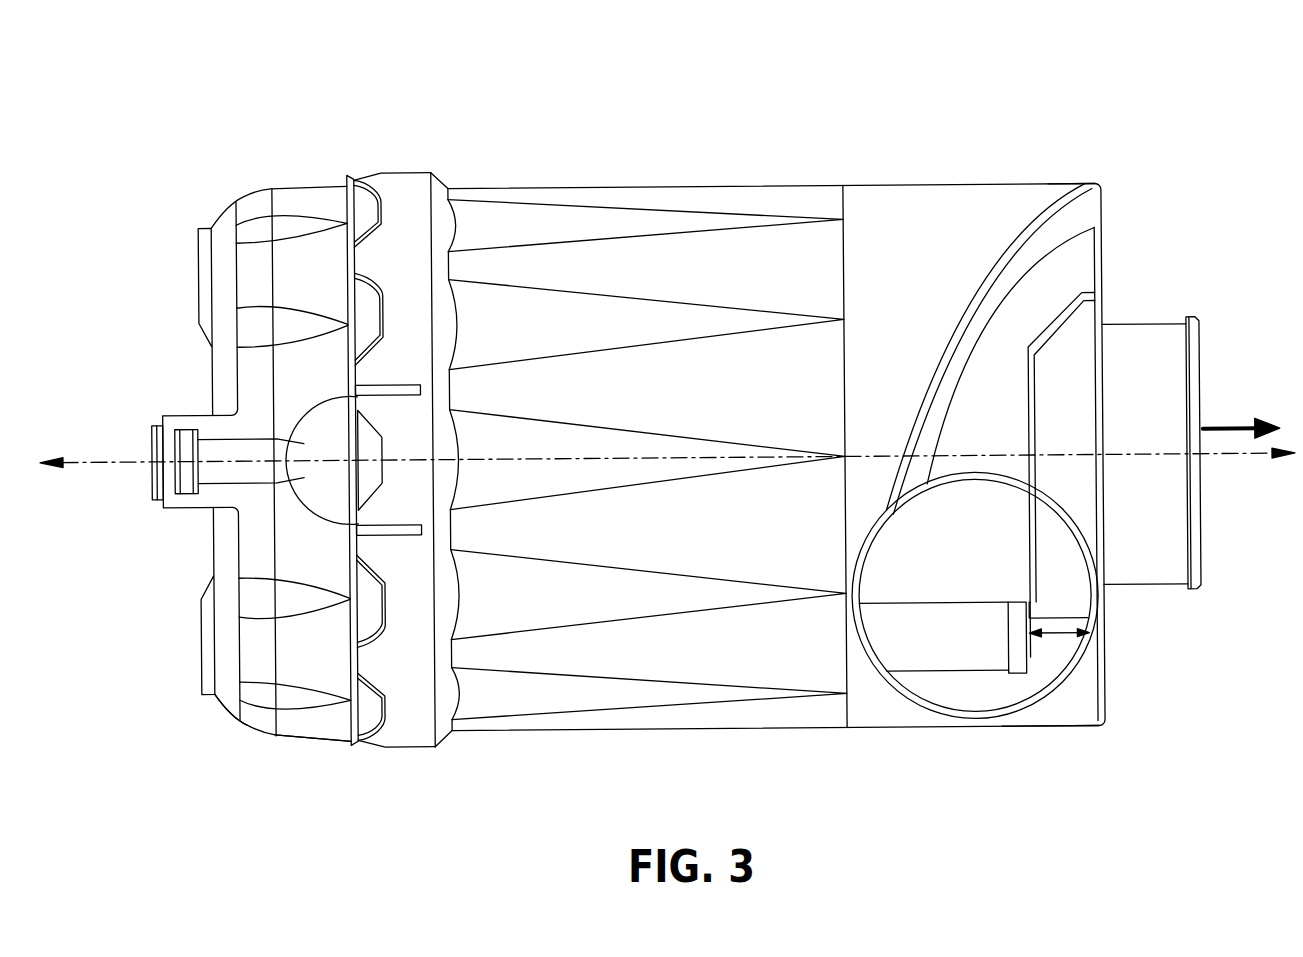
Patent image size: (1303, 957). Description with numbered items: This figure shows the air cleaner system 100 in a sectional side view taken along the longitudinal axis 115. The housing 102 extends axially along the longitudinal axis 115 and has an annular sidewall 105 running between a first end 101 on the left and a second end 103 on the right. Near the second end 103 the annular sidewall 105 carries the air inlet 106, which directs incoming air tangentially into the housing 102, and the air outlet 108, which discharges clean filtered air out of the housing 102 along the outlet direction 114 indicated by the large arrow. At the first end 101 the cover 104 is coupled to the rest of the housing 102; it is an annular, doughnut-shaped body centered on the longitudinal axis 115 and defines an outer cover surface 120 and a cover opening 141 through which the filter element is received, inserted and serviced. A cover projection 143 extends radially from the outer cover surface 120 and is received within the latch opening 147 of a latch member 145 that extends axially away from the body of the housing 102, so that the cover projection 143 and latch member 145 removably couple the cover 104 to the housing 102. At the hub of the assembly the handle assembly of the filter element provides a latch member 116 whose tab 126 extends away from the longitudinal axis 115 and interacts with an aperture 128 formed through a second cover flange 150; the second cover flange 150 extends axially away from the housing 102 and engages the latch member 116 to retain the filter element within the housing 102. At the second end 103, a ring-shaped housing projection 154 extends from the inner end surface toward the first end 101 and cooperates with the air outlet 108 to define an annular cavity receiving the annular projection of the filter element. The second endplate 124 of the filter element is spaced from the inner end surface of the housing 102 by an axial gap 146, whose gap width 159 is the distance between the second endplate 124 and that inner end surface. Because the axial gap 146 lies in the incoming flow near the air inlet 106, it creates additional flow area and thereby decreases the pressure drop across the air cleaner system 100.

The air cleaner system 100 is at (1113, 103).
The first end 101 is at (224, 750).
The housing 102 is at (574, 186).
The second end 103 is at (1146, 740).
The cover 104 is at (294, 192).
The annular sidewall 105 is at (754, 199).
The air inlet 106 is at (1062, 651).
The air outlet 108 is at (1206, 330).
The outlet direction 114 is at (1232, 432).
The longitudinal axis 115 is at (100, 458).
The latch member 116 is at (153, 423).
The outer cover surface 120 is at (326, 737).
The second endplate 124 is at (1033, 666).
The tab 126 is at (188, 490).
The aperture 128 is at (176, 403).
The cover opening 141 is at (208, 213).
The cover projection 143 is at (372, 485).
The latch member 145 is at (318, 478).
The axial gap 146 is at (1050, 665).
The latch opening 147 is at (352, 482).
The second cover flange 150 is at (212, 421).
The housing projection 154 is at (1068, 590).
The gap width 159 is at (1058, 636).